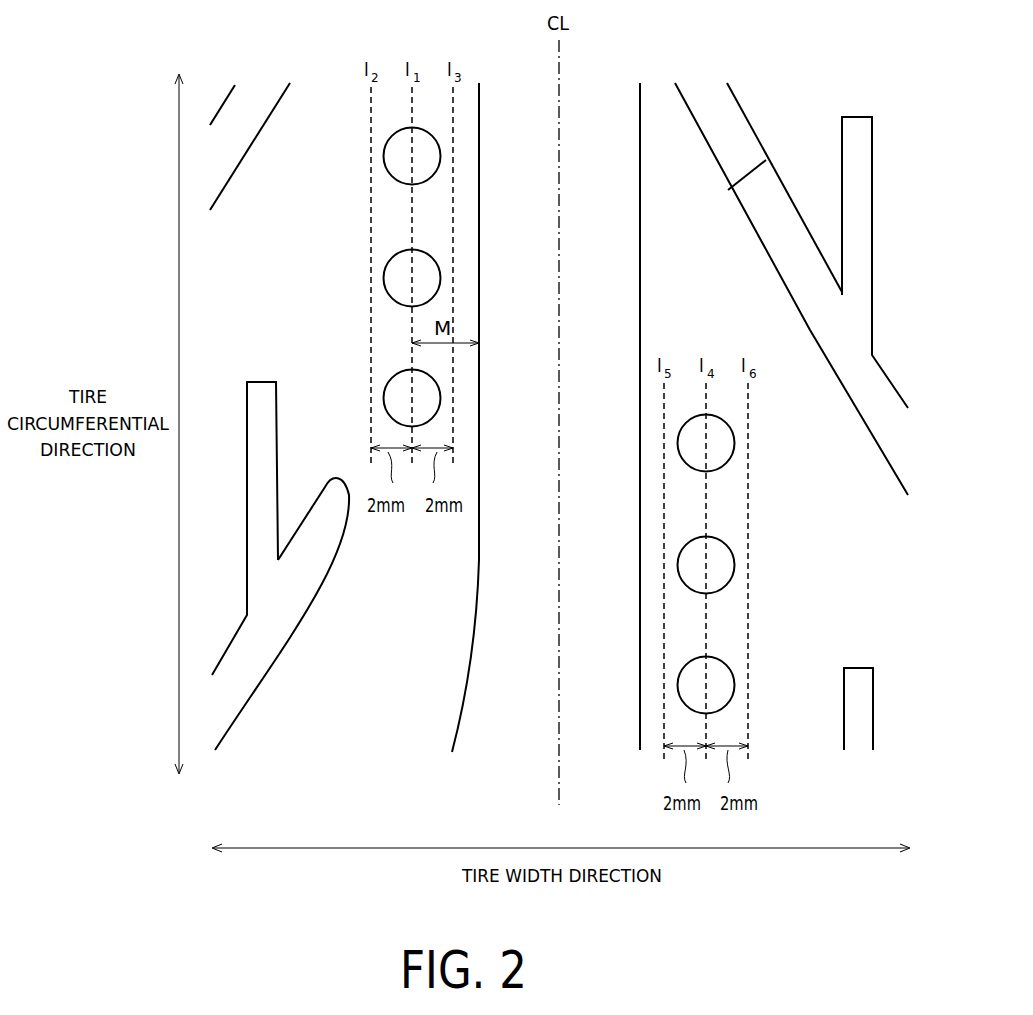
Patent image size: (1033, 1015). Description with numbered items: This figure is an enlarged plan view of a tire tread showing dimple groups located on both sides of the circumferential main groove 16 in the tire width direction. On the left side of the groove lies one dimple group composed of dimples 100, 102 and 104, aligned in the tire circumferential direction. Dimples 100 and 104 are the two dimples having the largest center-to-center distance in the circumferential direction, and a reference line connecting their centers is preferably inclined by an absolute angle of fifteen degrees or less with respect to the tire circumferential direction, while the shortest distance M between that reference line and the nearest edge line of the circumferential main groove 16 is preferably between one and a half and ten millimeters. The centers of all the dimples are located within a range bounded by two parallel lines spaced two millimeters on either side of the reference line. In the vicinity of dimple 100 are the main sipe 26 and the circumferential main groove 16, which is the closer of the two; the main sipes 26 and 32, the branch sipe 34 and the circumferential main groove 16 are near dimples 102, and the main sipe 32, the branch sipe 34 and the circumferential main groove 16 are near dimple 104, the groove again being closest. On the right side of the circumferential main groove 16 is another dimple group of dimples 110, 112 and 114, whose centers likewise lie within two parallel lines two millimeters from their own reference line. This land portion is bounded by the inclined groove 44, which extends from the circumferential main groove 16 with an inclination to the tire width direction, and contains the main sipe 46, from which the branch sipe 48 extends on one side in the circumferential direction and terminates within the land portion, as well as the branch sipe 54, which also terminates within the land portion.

The circumferential main groove 16 is at (597, 100).
The main sipe 26 is at (247, 133).
The main sipe 32 is at (327, 522).
The branch sipe 34 is at (258, 393).
The inclined groove 44 is at (723, 108).
The main sipe 46 is at (875, 430).
The branch sipe 48 is at (858, 157).
The branch sipe 54 is at (858, 678).
The dimple 100 is at (397, 138).
The dimple 102 is at (397, 262).
The dimple 104 is at (397, 385).
The dimple 110 is at (727, 436).
The dimple 112 is at (727, 568).
The dimple 114 is at (727, 687).